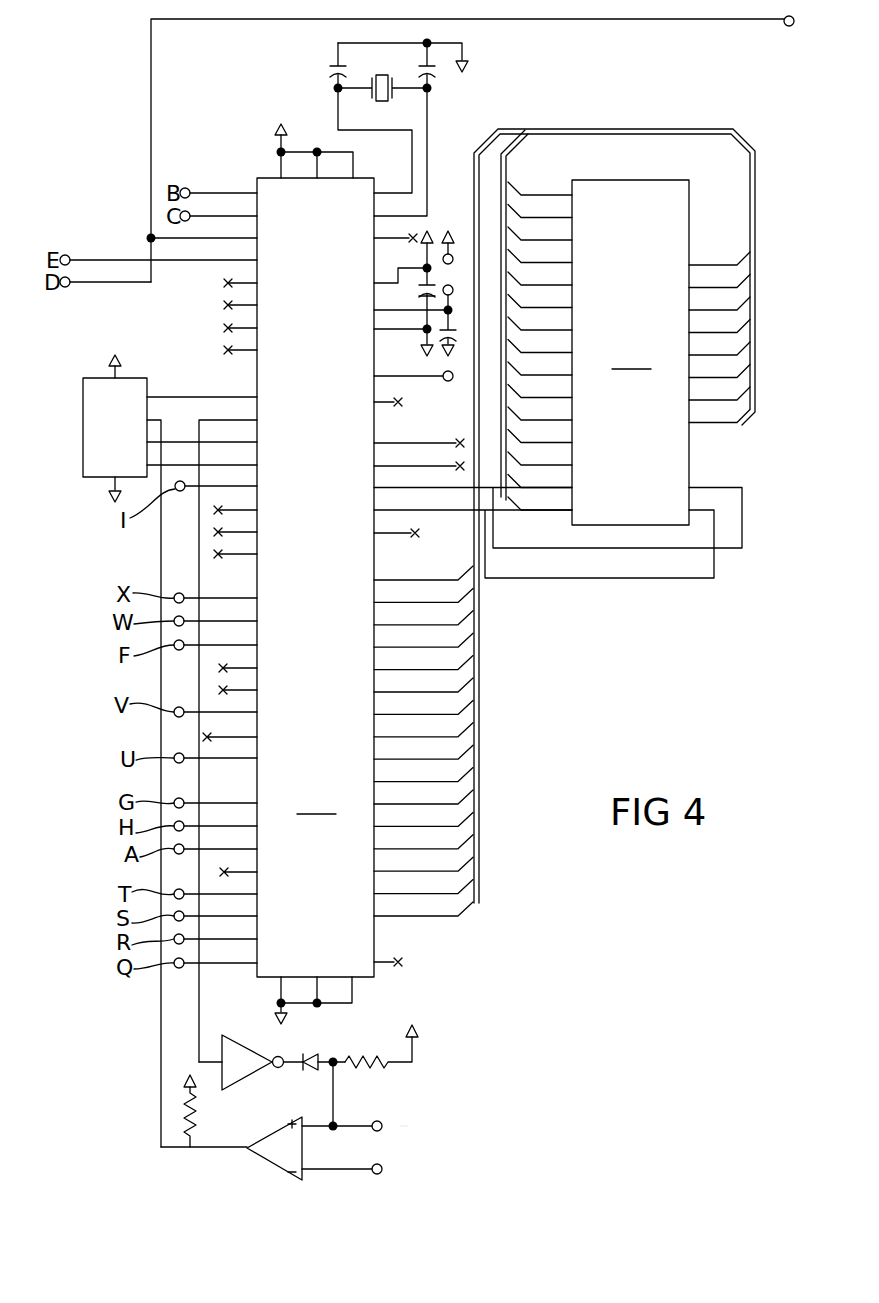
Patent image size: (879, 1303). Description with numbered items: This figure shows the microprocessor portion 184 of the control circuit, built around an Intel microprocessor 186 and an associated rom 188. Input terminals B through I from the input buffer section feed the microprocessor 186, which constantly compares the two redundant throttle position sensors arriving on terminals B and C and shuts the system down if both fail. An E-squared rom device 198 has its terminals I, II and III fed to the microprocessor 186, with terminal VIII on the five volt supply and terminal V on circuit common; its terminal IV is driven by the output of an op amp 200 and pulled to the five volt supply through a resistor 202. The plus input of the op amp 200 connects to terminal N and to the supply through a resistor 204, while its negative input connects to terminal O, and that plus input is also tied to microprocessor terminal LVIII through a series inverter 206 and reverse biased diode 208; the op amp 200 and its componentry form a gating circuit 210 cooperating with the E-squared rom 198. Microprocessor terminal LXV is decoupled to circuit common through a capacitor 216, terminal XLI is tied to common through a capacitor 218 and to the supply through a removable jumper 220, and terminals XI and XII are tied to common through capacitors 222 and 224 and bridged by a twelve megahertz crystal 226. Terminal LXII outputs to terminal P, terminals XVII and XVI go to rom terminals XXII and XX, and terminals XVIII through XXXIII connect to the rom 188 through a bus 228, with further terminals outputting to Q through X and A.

The microprocessor portion of control circuit 184 is at (114, 55).
The microprocessor 186 is at (333, 569).
The rom 188 is at (562, 354).
The E2 rom device 198 is at (92, 440).
The op amp 200 is at (266, 1150).
The resistor 202 is at (202, 1108).
The resistor 204 is at (384, 1068).
The inverter 206 is at (250, 1056).
The reverse biased diode 208 is at (311, 1053).
The gating circuit 210 is at (416, 1130).
The capacitor 216 is at (427, 290).
The capacitor 218 is at (453, 381).
The removable jumper 220 is at (456, 290).
The capacitor 222 is at (331, 68).
The capacitor 224 is at (433, 72).
The crystal 226 is at (398, 78).
The bus 228 is at (480, 667).